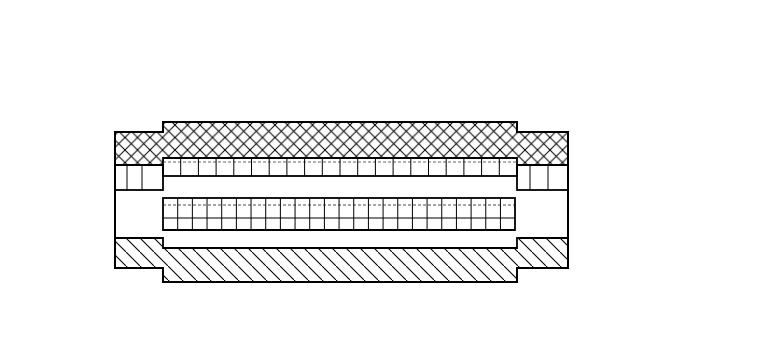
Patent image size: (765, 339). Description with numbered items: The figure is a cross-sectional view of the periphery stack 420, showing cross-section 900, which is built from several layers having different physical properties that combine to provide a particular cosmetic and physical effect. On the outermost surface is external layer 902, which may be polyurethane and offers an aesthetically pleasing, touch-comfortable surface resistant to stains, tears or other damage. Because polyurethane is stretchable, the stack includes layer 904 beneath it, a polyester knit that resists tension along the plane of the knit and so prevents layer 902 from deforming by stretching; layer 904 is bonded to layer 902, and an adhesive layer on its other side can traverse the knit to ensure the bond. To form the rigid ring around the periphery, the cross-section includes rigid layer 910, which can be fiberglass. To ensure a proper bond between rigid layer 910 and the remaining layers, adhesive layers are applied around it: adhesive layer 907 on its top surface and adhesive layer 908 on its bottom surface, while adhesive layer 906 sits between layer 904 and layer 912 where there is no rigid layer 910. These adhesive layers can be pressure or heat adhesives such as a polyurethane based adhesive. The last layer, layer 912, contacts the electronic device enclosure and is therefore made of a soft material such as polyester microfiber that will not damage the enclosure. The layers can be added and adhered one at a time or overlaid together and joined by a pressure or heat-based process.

The cross-section 900 is at (563, 99).
The external layer 902 is at (568, 158).
The periphery stack 420 is at (390, 134).
The adhesive layer 907 is at (225, 190).
The layer 904 is at (130, 177).
The adhesive layer 906 is at (558, 215).
The rigid layer 910 is at (207, 217).
The adhesive layer 908 is at (440, 237).
The layer 912 is at (132, 253).